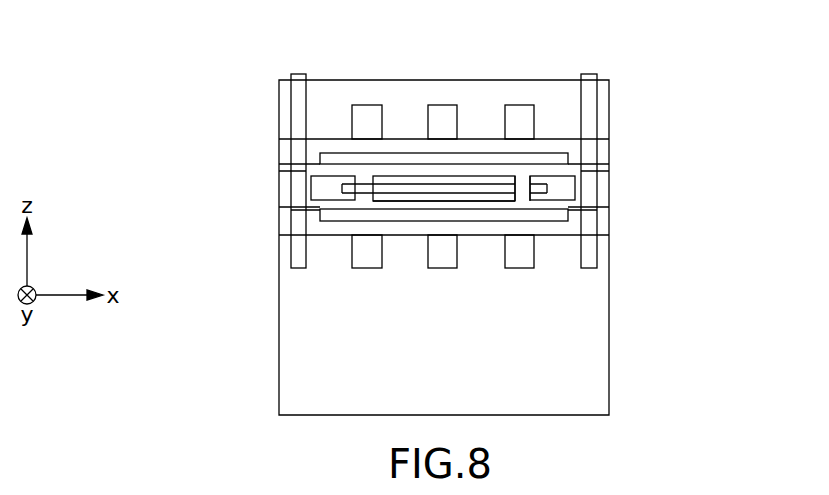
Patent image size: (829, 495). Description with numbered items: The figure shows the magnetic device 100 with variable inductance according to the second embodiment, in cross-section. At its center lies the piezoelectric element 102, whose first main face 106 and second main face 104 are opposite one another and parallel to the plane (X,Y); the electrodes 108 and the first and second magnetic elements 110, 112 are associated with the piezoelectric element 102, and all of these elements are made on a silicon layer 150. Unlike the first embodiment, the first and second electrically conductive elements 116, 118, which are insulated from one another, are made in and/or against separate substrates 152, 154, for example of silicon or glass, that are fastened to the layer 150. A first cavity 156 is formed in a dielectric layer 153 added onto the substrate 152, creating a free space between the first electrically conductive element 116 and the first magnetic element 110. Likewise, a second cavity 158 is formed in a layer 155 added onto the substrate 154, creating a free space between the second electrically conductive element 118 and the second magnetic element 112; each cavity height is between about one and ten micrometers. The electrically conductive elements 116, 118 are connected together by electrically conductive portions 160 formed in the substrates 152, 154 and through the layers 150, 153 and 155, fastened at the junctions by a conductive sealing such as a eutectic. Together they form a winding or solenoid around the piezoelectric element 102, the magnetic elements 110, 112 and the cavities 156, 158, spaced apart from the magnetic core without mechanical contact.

The magnetic device 100 is at (642, 58).
The piezoelectric element 102 is at (540, 186).
The second main face 104 is at (520, 177).
The first main face 106 is at (521, 200).
The electrodes 108 is at (318, 188).
The first magnetic element 110 is at (376, 197).
The second magnetic element 112 is at (408, 182).
The first electrically conductive element 116 is at (441, 262).
The second electrically conductive element 118 is at (367, 113).
The silicon layer 150 is at (602, 204).
The substrate 152 is at (600, 345).
The dielectric layer 153 is at (285, 218).
The substrate 154 is at (604, 109).
The layer 155 is at (603, 150).
The first cavity 156 is at (562, 214).
The second cavity 158 is at (336, 157).
The electrically conductive portions 160 is at (298, 96).